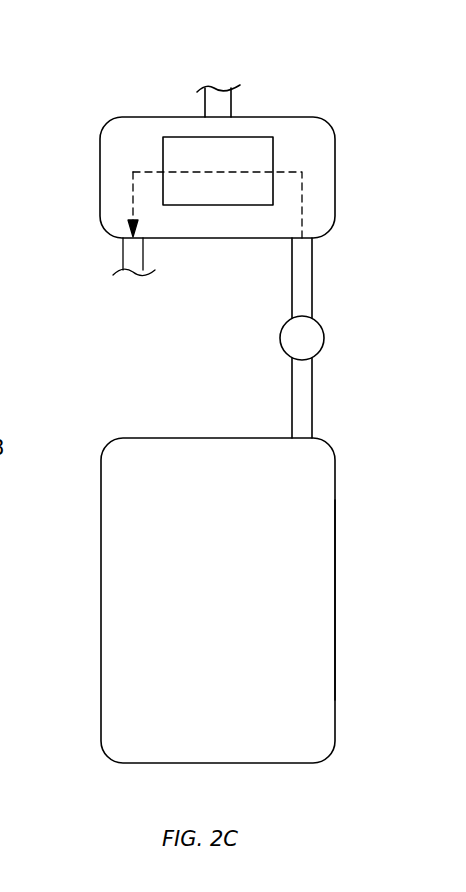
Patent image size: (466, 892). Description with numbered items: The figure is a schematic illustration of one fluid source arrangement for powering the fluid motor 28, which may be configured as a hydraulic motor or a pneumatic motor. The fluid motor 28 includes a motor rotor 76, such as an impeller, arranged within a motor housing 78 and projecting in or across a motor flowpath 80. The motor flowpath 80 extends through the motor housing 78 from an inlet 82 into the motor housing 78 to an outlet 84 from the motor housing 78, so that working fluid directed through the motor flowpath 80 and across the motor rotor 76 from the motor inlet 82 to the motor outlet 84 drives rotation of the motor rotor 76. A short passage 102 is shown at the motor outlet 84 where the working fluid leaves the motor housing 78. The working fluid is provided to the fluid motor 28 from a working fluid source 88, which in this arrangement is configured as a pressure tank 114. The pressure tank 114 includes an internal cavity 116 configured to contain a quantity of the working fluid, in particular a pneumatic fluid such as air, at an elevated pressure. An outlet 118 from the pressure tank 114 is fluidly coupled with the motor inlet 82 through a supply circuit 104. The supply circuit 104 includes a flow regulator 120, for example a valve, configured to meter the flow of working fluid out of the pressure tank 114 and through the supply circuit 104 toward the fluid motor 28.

The fluid motor 28 is at (315, 97).
The motor rotor 76 is at (273, 152).
The motor housing 78 is at (100, 138).
The motor flowpath 80 is at (302, 192).
The motor inlet 82 is at (312, 240).
The motor outlet 84 is at (122, 243).
The working fluid source 88 is at (365, 495).
The inlet 102 is at (144, 254).
The supply circuit 104 is at (292, 392).
The pressure tank 114 is at (343, 618).
The internal cavity 116 is at (237, 615).
The outlet 118 is at (312, 437).
The flow regulator 120 is at (324, 338).